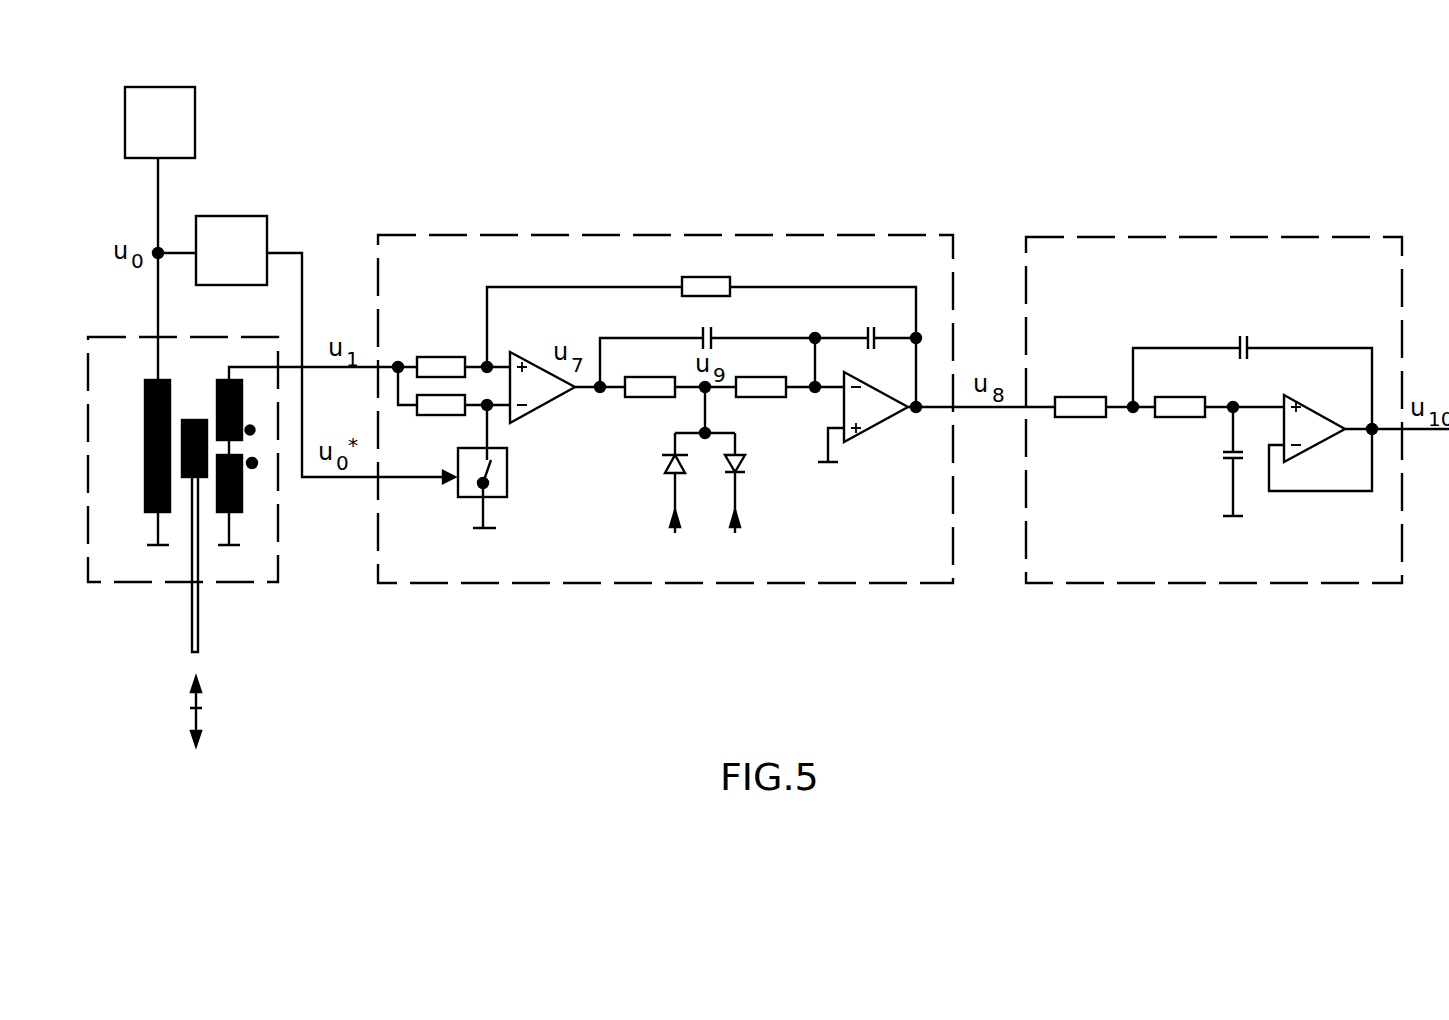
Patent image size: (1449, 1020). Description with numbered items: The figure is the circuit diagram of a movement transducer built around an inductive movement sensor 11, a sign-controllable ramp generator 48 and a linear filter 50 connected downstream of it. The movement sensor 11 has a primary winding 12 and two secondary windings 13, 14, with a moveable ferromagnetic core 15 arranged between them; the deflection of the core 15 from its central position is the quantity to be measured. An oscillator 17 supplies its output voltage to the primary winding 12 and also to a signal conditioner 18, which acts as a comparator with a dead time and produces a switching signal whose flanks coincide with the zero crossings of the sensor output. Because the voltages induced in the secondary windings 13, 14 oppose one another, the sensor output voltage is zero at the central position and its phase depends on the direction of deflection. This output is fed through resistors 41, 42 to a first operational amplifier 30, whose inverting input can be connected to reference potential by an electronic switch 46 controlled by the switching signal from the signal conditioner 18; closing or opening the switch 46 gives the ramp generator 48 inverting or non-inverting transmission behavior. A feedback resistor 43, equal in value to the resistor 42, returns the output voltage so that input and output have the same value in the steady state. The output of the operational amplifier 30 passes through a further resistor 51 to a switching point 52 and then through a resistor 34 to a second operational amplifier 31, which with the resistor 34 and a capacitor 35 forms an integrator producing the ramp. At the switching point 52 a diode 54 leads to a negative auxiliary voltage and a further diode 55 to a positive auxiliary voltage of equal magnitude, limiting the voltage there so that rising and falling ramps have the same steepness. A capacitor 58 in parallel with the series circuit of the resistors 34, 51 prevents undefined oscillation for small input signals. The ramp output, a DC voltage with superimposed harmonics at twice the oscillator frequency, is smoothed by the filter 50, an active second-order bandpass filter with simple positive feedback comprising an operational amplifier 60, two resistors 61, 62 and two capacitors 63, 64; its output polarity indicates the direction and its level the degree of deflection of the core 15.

The inductive movement sensor 11 is at (237, 583).
The primary winding 12 is at (145, 488).
The secondary winding 13 is at (256, 402).
The secondary winding 14 is at (242, 508).
The moveable ferromagnetic core 15 is at (194, 420).
The oscillator 17 is at (195, 103).
The signal conditioner 18 is at (248, 216).
The operational amplifier 30 is at (540, 410).
The operational amplifier 31 is at (866, 432).
The resistor 34 is at (755, 398).
The capacitor 35 is at (866, 328).
The resistor 41 is at (445, 415).
The resistor 42 is at (452, 357).
The resistor 43 is at (733, 284).
The electronic switch 46 is at (507, 475).
The ramp generator 48 is at (612, 583).
The linear filter 50 is at (1178, 583).
The resistor 51 is at (630, 397).
The switching point 52 is at (700, 392).
The diode 54 is at (665, 468).
The diode 55 is at (745, 465).
The capacitor 58 is at (700, 330).
The operational amplifier 60 is at (1318, 445).
The resistor 61 is at (1068, 418).
The resistor 62 is at (1170, 418).
The capacitor 63 is at (1237, 335).
The capacitor 64 is at (1228, 462).